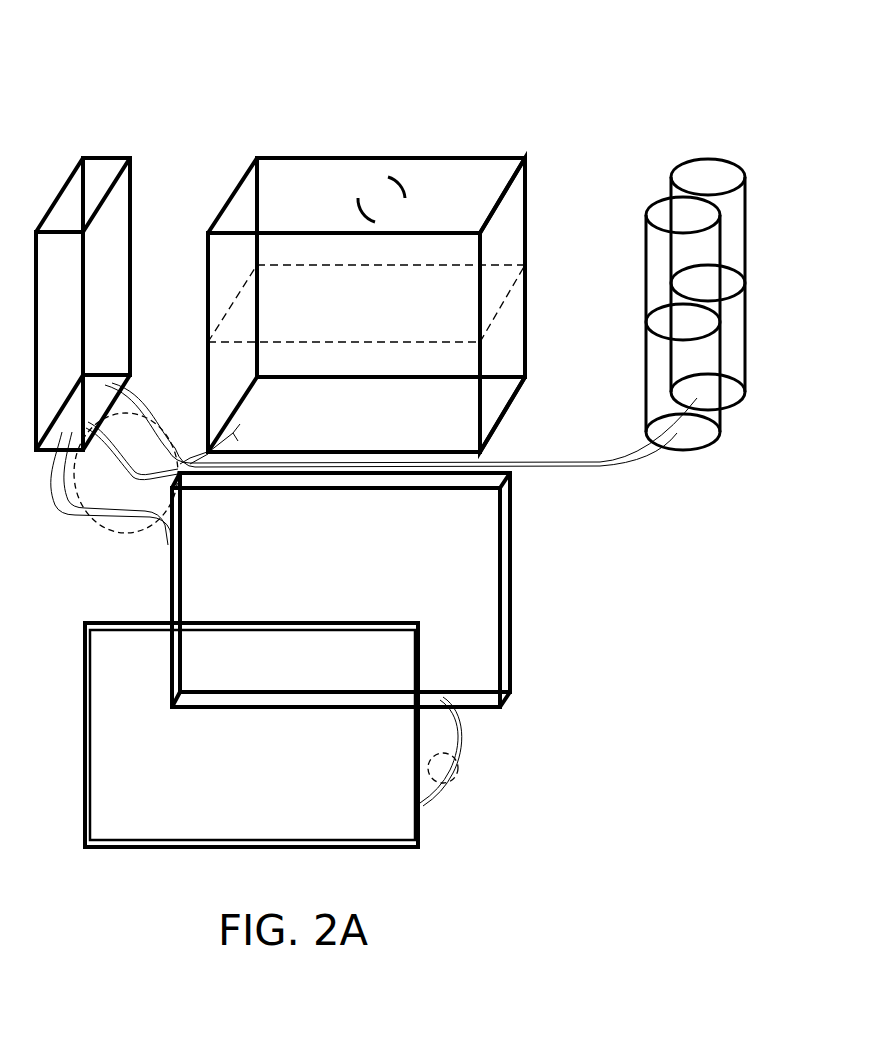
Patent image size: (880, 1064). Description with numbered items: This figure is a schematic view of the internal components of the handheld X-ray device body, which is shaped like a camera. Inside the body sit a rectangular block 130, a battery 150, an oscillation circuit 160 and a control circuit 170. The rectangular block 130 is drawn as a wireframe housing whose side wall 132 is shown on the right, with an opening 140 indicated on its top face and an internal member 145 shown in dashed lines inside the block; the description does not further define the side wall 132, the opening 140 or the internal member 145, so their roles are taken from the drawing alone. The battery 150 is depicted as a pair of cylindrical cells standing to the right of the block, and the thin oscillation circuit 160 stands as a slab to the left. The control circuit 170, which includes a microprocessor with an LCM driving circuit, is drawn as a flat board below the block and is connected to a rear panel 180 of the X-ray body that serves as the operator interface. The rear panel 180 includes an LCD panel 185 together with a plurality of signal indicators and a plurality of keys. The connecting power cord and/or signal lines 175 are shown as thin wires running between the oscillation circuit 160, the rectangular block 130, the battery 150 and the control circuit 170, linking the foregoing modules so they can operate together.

The rectangular block 130 is at (404, 248).
The side wall of housing 132 is at (507, 243).
The opening 140 is at (373, 202).
The internal board 145 is at (510, 355).
The battery 150 is at (730, 340).
The oscillation circuit 160 is at (120, 227).
The control circuit 170 is at (310, 580).
The connecting power cord and/or signal lines 175 is at (163, 417).
The rear panel 180 is at (347, 735).
The LCD panel 185 is at (222, 786).